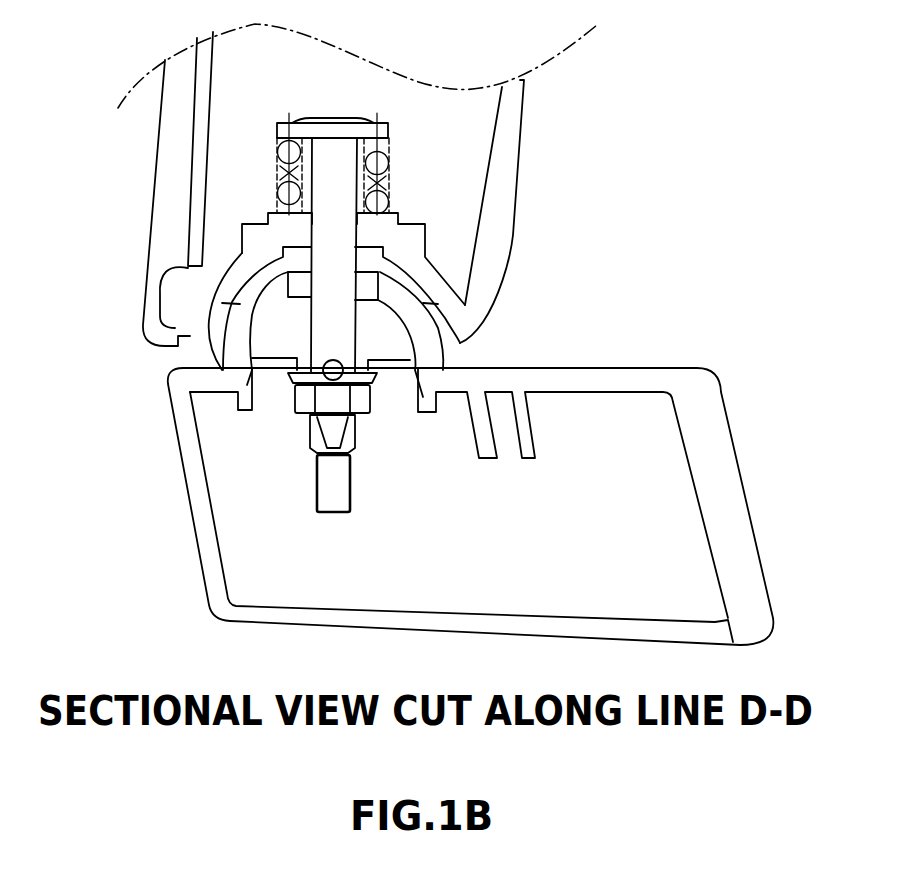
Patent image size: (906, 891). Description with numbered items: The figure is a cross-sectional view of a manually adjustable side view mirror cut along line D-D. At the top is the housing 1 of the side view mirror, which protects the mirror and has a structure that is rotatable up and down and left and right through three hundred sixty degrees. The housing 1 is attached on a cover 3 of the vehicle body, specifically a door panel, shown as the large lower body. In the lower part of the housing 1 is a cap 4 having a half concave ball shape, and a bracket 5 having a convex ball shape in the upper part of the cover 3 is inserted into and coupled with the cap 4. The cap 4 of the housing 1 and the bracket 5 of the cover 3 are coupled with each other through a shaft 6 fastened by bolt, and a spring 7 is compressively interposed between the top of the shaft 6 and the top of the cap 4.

The housing 1 is at (503, 213).
The cover 3 is at (597, 382).
The cap 4 is at (218, 300).
The bracket 5 is at (245, 336).
The shaft 6 is at (328, 194).
The spring 7 is at (383, 162).